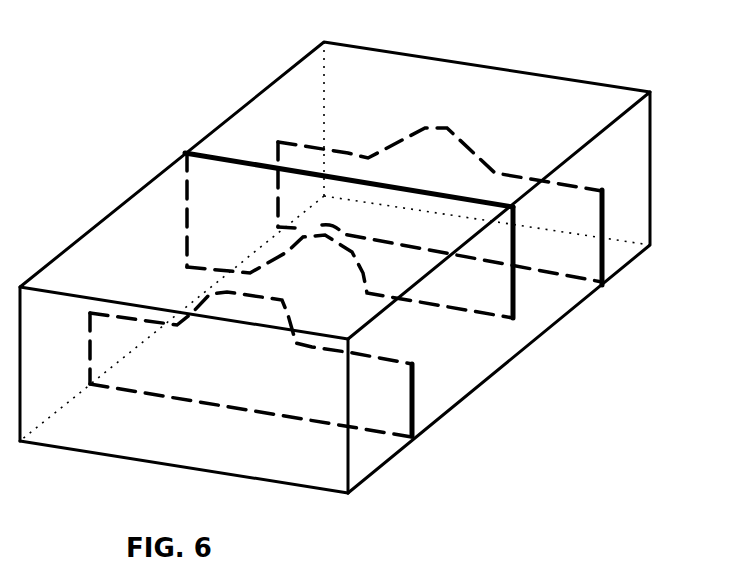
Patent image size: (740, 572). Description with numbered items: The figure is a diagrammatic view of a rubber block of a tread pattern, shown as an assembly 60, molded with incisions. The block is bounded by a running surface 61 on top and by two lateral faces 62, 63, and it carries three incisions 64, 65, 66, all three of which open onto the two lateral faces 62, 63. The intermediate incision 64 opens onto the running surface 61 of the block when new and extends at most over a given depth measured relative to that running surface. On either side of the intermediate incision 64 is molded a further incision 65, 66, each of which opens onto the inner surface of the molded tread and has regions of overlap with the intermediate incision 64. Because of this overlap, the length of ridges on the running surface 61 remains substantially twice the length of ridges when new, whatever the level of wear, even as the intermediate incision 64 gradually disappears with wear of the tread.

The housing 60 is at (604, 62).
The running surface 61 is at (405, 90).
The lateral face 62 is at (620, 148).
The lateral face 63 is at (206, 130).
The intermediate incision 64 is at (518, 248).
The incision 65 is at (603, 215).
The incision 66 is at (413, 394).